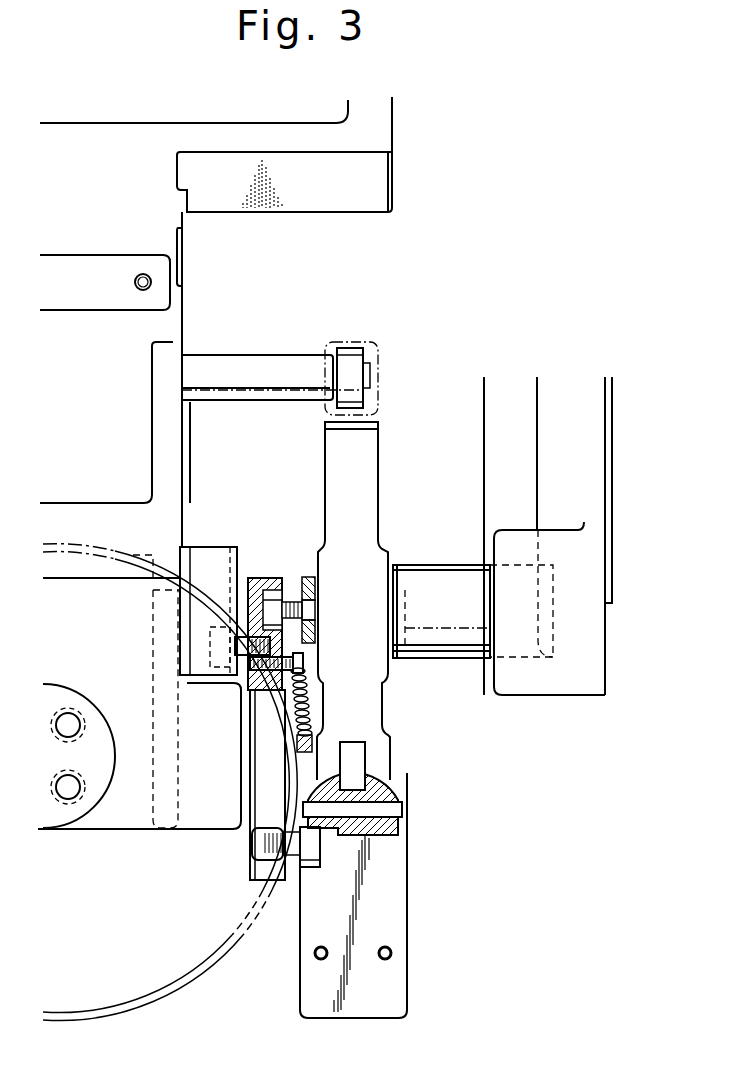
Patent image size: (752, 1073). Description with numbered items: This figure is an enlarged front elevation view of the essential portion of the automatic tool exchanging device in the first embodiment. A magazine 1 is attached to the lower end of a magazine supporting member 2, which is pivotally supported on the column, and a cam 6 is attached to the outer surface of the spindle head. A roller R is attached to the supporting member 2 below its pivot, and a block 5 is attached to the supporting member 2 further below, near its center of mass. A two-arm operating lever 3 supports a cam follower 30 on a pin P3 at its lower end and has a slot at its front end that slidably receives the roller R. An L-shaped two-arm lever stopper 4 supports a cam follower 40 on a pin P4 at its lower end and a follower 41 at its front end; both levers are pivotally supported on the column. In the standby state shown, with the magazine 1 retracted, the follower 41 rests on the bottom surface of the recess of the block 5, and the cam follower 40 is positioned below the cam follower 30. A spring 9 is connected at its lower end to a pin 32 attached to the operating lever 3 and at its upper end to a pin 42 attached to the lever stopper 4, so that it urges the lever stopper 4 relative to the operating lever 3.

The magazine 1 is at (223, 940).
The magazine supporting member 2 is at (167, 320).
The two-arm operating lever 3 is at (370, 463).
The L-shaped two-arm lever stopper 4 is at (262, 580).
The block 5 is at (200, 548).
The cam 6 is at (405, 890).
The spring 9 is at (310, 703).
The cam follower 30 is at (375, 832).
The pin 32 is at (265, 758).
The cam follower 40 is at (315, 865).
The follower 41 is at (230, 547).
The pin 42 is at (272, 670).
The roller R is at (358, 352).
The pin P3 is at (400, 812).
The pin P4 is at (262, 838).